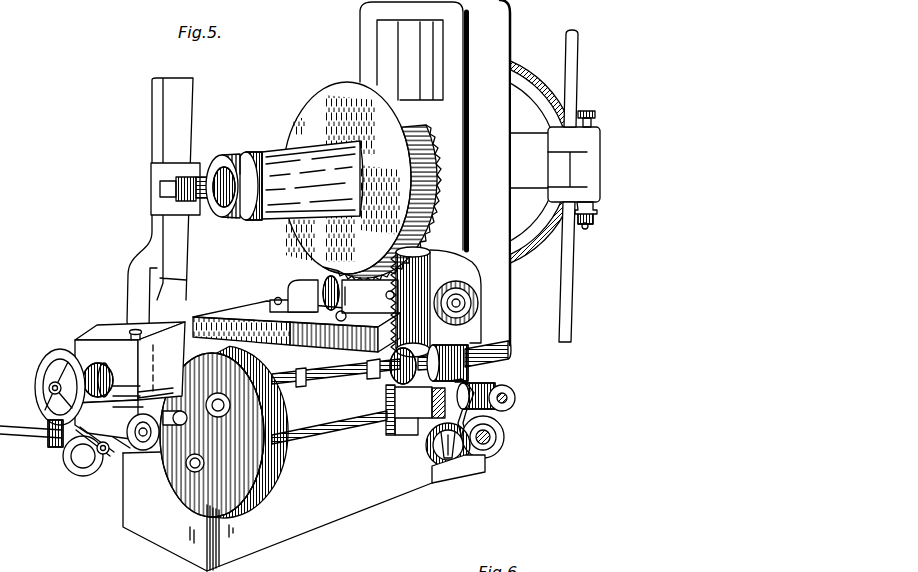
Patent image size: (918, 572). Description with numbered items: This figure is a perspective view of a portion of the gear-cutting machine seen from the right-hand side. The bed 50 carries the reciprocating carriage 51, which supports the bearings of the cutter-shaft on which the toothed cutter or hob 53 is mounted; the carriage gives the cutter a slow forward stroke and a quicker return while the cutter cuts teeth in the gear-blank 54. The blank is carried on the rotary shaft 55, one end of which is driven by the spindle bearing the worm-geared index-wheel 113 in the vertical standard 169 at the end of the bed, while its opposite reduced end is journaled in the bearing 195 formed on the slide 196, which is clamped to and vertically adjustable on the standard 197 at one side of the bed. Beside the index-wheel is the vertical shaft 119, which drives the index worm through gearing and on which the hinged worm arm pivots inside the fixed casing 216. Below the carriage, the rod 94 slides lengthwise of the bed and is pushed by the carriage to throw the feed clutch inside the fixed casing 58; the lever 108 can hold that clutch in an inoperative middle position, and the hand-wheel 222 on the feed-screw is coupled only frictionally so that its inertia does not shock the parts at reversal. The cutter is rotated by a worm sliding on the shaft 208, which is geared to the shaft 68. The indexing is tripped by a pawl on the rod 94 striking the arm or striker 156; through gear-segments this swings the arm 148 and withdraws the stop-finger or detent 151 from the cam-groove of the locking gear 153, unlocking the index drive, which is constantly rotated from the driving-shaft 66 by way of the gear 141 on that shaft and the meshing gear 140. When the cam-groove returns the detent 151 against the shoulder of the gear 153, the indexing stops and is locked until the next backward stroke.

The bed 50 is at (350, 497).
The reciprocating carriage 51 is at (253, 317).
The toothed cutter or hob 53 is at (332, 277).
The gear-blank 54 is at (303, 242).
The rotary shaft 55 is at (223, 214).
The fixed casing 58 is at (89, 333).
The driving-shaft 66 is at (515, 400).
The shaft 68 is at (338, 423).
The rod 94 is at (317, 375).
The lever 108 is at (155, 383).
The worm-geared index-wheel 113 is at (537, 78).
The vertical shaft 119 is at (571, 287).
The gear 140 is at (505, 442).
The gear 141 is at (500, 386).
The arm 148 is at (435, 430).
The stop-finger or detent 151 is at (461, 472).
The gear 153 is at (434, 465).
The arm or striker 156 is at (469, 377).
The vertical standard 169 is at (360, 57).
The bearing 195 is at (197, 214).
The slide 196 is at (158, 176).
The standard 197 is at (190, 131).
The shaft 208 is at (503, 348).
The fixed casing 216 is at (598, 164).
The hand-wheel 222 is at (53, 353).